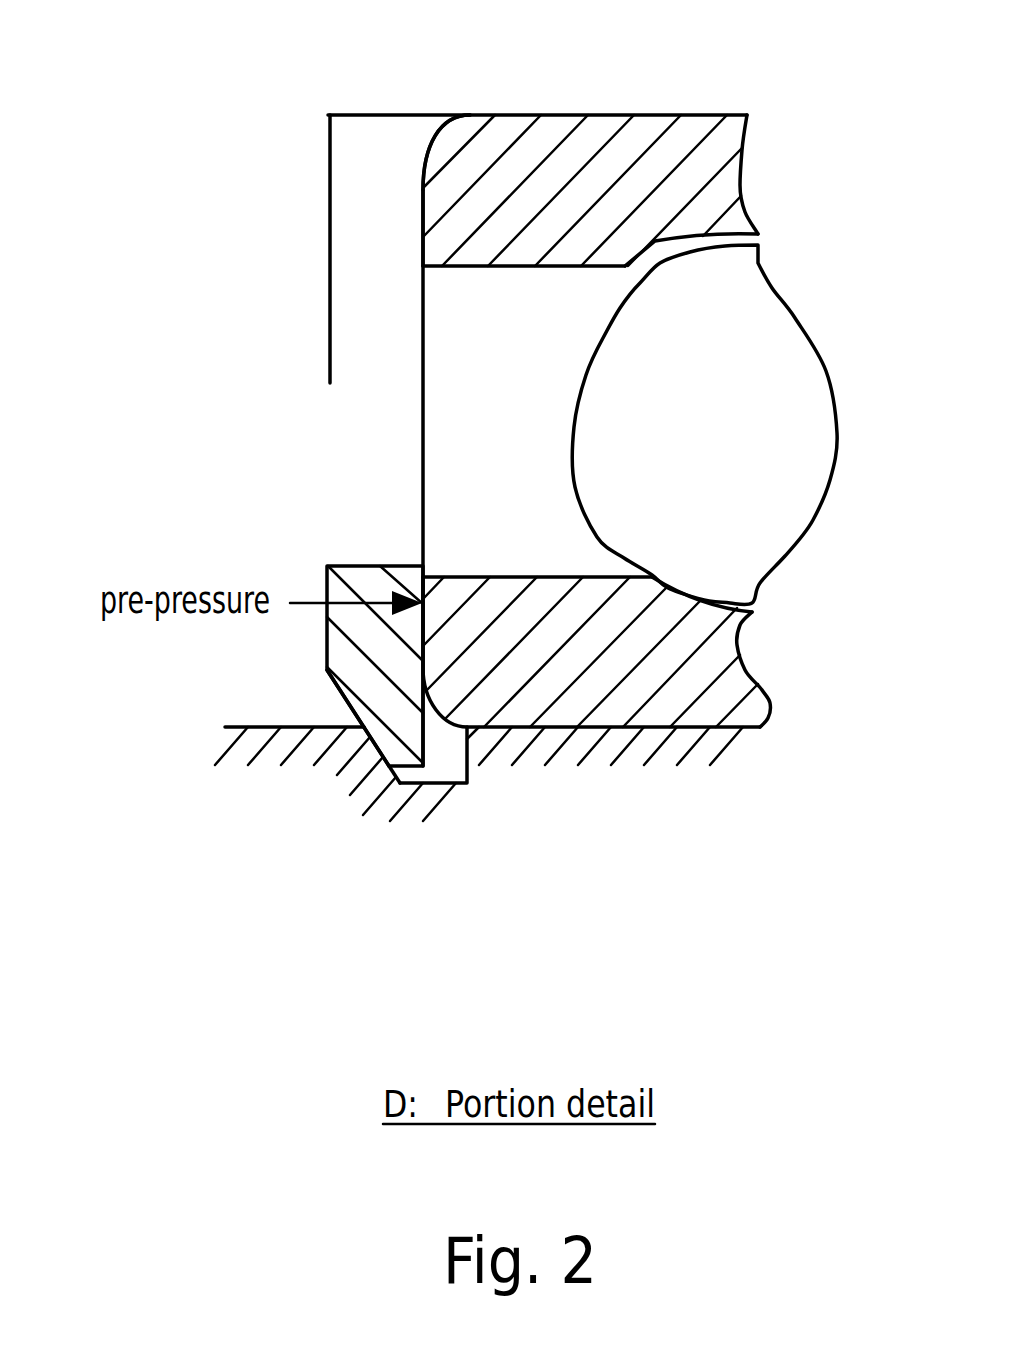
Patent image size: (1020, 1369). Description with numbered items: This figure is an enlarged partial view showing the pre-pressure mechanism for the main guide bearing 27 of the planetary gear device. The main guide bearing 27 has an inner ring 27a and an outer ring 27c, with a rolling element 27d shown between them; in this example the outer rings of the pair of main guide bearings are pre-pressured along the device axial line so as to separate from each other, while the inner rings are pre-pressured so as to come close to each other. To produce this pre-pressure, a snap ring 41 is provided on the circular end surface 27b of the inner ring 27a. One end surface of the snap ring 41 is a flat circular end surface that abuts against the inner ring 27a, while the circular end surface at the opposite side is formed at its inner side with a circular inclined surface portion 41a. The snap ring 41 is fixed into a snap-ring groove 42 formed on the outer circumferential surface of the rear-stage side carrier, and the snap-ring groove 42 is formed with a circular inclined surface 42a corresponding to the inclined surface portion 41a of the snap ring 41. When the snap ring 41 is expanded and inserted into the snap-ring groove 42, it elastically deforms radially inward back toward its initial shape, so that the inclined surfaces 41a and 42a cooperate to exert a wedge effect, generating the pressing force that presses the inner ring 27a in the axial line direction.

The main guide bearing 27 is at (622, 113).
The inner ring 27a is at (563, 692).
The circular end surface 27b is at (423, 533).
The outer ring 27c is at (456, 143).
The ball (rolling element) 27d is at (748, 509).
The snap ring 41 is at (378, 700).
The circular inclined surface portion 41a is at (347, 703).
The snap-ring groove 42 is at (420, 775).
The circular inclined surface 42a is at (392, 760).